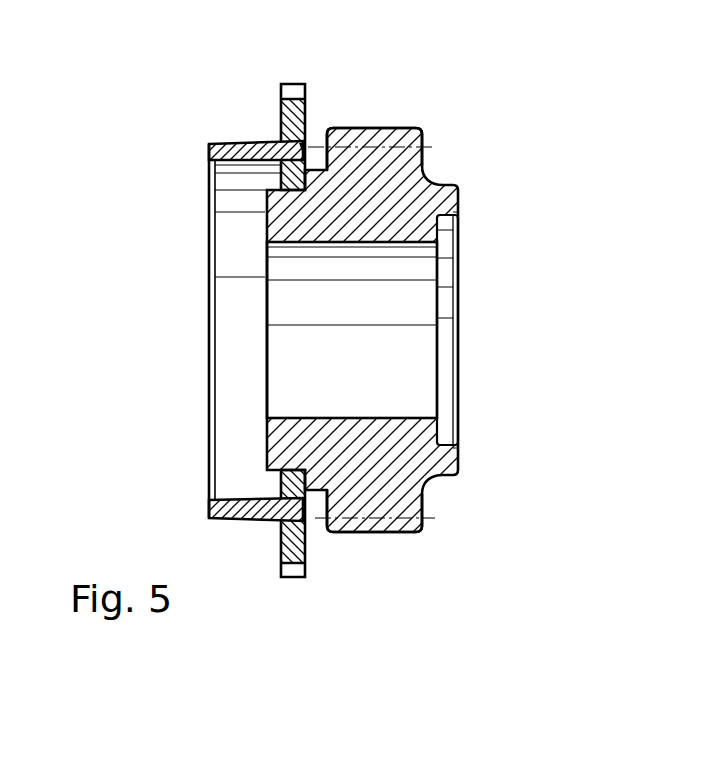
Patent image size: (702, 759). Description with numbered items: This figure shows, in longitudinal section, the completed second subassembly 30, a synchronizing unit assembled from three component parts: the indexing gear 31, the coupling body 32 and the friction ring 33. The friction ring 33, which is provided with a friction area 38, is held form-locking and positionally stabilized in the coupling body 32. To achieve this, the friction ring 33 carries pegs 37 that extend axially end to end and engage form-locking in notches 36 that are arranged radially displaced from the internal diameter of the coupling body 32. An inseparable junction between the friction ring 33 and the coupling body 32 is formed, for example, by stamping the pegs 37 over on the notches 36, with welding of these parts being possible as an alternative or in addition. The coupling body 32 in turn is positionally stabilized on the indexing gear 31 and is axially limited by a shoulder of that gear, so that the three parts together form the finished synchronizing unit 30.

The subassembly 30 is at (318, 533).
The indexing gear 31 is at (425, 487).
The coupling body 32 is at (281, 543).
The friction ring 33 is at (210, 503).
The notches 36 is at (370, 129).
The pegs 37 is at (307, 149).
The friction area 38 is at (233, 141).